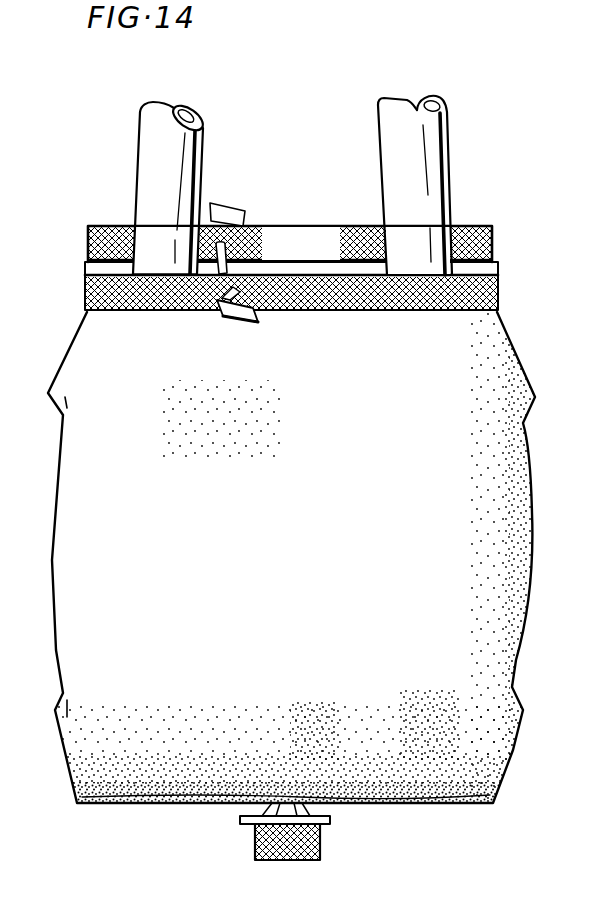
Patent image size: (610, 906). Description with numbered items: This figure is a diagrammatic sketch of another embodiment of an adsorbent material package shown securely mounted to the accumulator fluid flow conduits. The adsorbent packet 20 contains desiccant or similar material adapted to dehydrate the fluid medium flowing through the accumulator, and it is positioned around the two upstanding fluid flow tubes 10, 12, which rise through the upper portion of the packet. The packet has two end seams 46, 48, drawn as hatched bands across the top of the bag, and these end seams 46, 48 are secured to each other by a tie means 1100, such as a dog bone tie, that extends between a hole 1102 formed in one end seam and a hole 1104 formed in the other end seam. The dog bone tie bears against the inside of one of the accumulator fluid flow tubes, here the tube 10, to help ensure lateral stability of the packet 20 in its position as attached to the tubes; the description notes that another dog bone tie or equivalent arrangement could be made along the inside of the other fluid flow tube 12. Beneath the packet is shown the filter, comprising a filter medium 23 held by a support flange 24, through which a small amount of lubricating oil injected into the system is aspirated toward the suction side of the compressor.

The fluid flow tube 10 is at (190, 143).
The fluid flow tube 12 is at (420, 158).
The adsorbent packet 20 is at (254, 544).
The filter medium 23 is at (322, 849).
The support flange 24 is at (332, 819).
The end seam 46 is at (91, 225).
The end seam 48 is at (498, 291).
The tie means 1100 is at (228, 212).
The hole 1102 is at (250, 228).
The hole 1104 is at (214, 301).